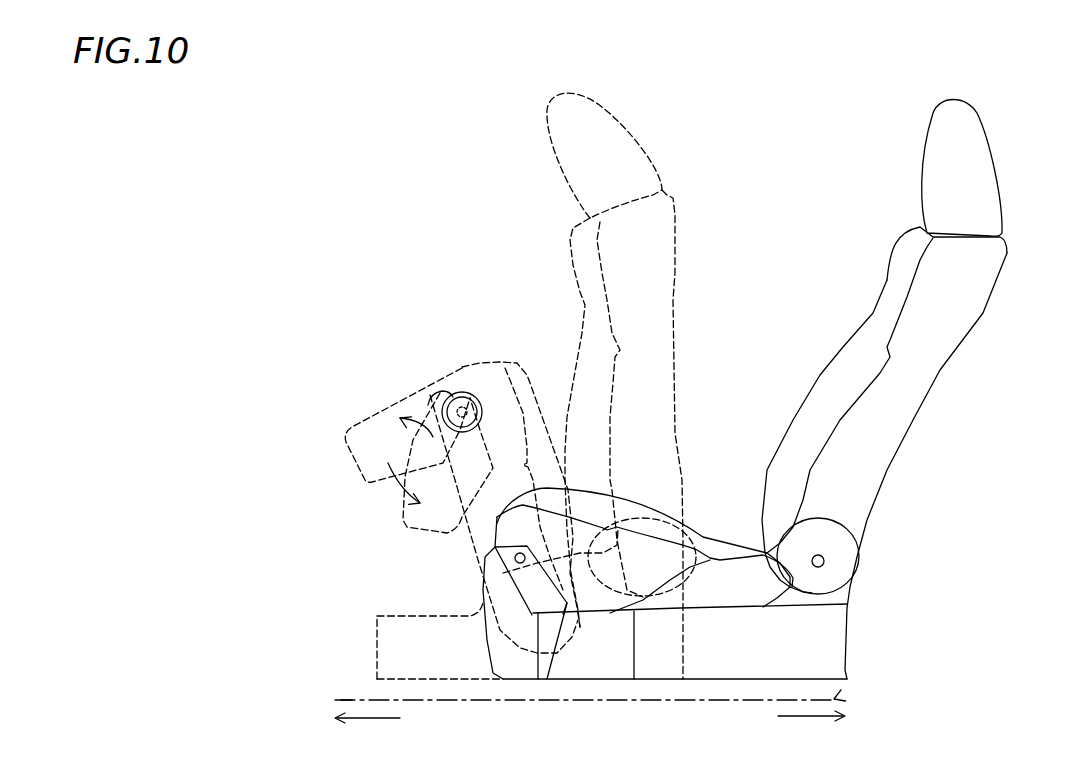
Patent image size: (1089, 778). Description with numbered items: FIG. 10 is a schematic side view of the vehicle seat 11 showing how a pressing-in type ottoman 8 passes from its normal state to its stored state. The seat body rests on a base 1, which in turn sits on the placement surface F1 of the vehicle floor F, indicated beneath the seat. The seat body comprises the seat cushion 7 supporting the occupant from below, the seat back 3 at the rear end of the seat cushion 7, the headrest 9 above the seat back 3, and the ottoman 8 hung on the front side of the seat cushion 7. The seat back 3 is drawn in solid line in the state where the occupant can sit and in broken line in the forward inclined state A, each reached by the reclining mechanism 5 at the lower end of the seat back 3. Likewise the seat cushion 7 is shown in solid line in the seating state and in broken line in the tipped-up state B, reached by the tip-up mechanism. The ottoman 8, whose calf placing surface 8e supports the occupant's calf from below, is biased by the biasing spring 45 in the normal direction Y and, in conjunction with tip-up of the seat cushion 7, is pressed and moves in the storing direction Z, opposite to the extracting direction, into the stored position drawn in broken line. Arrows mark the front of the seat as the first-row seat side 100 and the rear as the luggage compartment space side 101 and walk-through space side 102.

The base 1 is at (847, 657).
The seat back 3 is at (940, 337).
The reclining mechanism 5 is at (843, 557).
The seat cushion 7 is at (715, 553).
The ottoman 8 is at (413, 527).
The calf placing surface 8e is at (382, 400).
The headrest 9 is at (973, 168).
The vehicle seat 11 is at (905, 390).
The biasing spring 45 is at (462, 392).
The first-row seat side 100 is at (367, 731).
The luggage compartment space side 101 is at (814, 730).
The walk-through space side 102 is at (831, 738).
The forward inclined state A is at (673, 268).
The tip-up state B is at (530, 383).
The floor F is at (347, 700).
The placement surface F1 is at (836, 699).
The normal direction Y is at (433, 437).
The storing direction Z is at (388, 465).